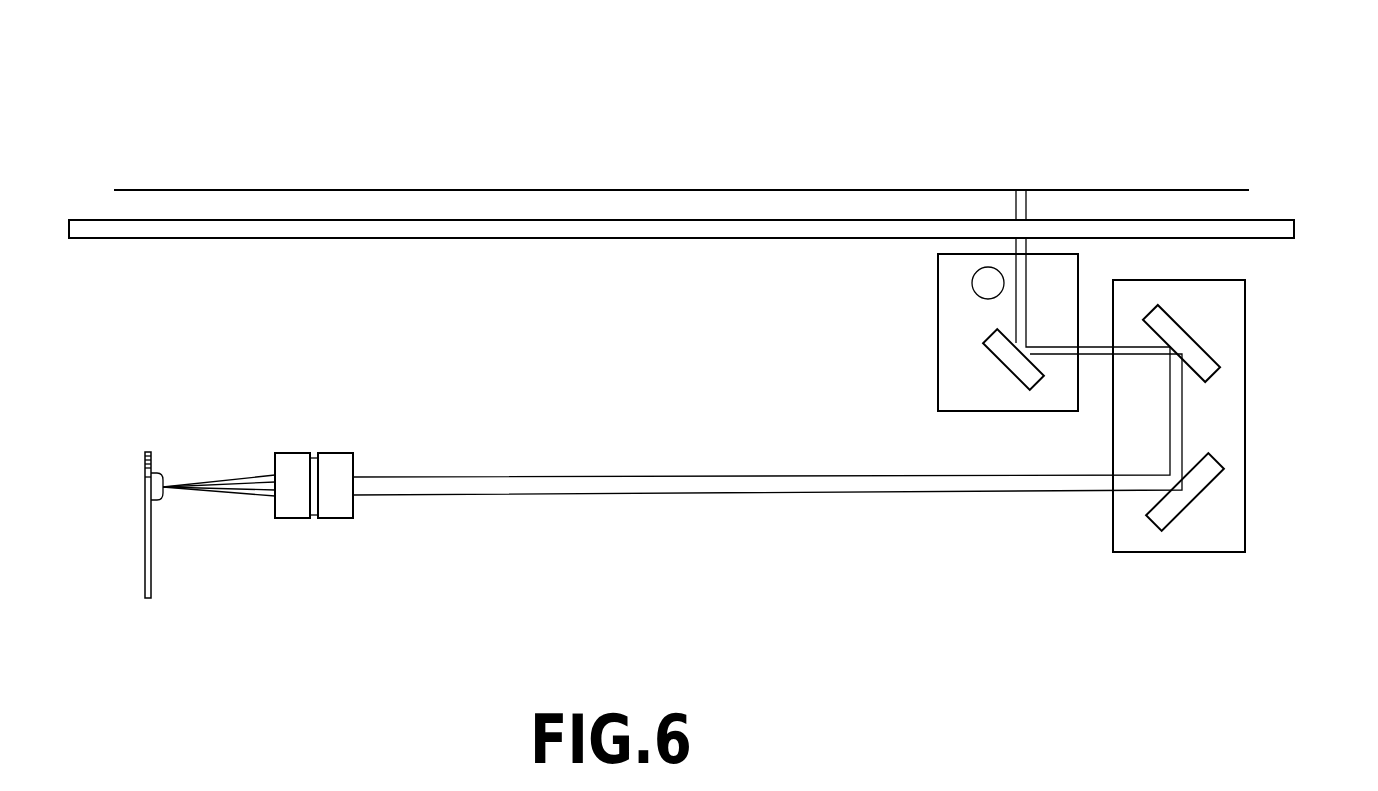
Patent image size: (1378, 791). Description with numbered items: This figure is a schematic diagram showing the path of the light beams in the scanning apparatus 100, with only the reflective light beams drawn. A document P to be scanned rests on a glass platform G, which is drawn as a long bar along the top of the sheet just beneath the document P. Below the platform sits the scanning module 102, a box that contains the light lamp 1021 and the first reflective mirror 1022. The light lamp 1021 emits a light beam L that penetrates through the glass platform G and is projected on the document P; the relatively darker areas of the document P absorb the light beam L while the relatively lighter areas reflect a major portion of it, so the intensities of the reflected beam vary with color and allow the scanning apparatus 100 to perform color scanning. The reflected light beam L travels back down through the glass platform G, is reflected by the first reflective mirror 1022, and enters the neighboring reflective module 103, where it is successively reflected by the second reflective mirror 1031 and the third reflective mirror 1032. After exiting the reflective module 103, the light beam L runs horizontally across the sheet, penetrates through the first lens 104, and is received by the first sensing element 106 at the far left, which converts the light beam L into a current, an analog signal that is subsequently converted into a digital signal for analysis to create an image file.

The scanning apparatus 100 is at (392, 135).
The document P is at (1117, 186).
The glass platform G is at (1262, 228).
The light beam L is at (785, 482).
The scanning module 102 is at (953, 365).
The light lamp 1021 is at (988, 283).
The first reflective mirror 1022 is at (1017, 360).
The reflective module 103 is at (1240, 458).
The second reflective mirror 1031 is at (1192, 347).
The third reflective mirror 1032 is at (1183, 493).
The first lens 104 is at (338, 500).
The first sensing element 106 is at (150, 452).